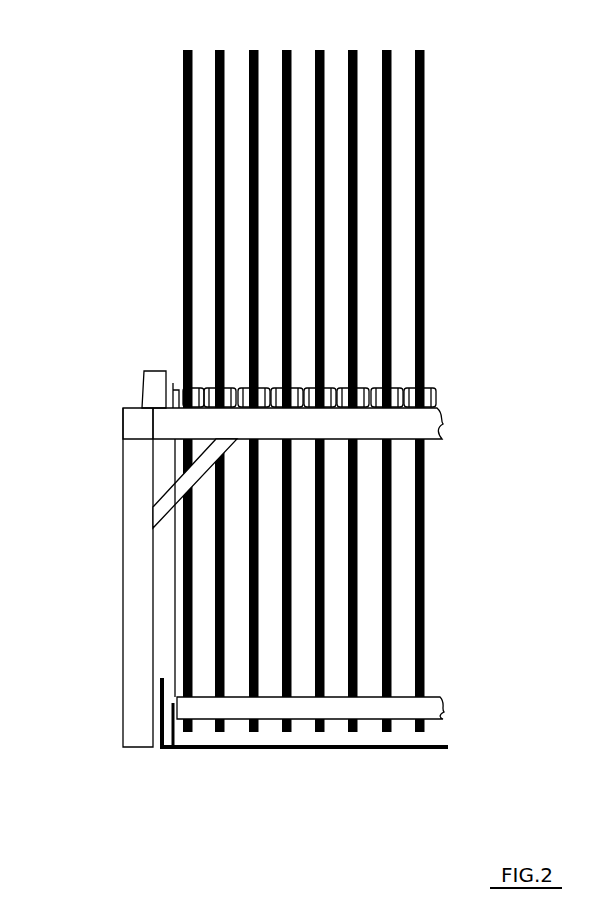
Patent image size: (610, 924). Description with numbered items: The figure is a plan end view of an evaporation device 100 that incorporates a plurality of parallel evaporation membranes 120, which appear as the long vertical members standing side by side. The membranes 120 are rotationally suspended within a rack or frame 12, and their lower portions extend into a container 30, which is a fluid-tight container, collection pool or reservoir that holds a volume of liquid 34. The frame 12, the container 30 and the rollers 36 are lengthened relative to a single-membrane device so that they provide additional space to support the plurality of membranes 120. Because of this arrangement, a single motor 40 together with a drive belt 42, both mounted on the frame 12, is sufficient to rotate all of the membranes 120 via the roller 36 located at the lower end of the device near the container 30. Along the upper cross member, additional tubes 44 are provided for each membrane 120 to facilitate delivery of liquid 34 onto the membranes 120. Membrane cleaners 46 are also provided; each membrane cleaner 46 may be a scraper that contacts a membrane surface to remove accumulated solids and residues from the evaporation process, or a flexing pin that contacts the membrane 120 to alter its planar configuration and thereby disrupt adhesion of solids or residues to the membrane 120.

The evaporation membranes 120 is at (386, 50).
The evaporation device 100 is at (542, 125).
The membrane cleaner 46 is at (365, 388).
The tubes 44 is at (232, 388).
The motor 40 is at (142, 382).
The frame 12 is at (123, 470).
The drive belt 42 is at (175, 612).
The liquid 34 is at (437, 698).
The rollers 36 is at (405, 720).
The container 30 is at (233, 765).